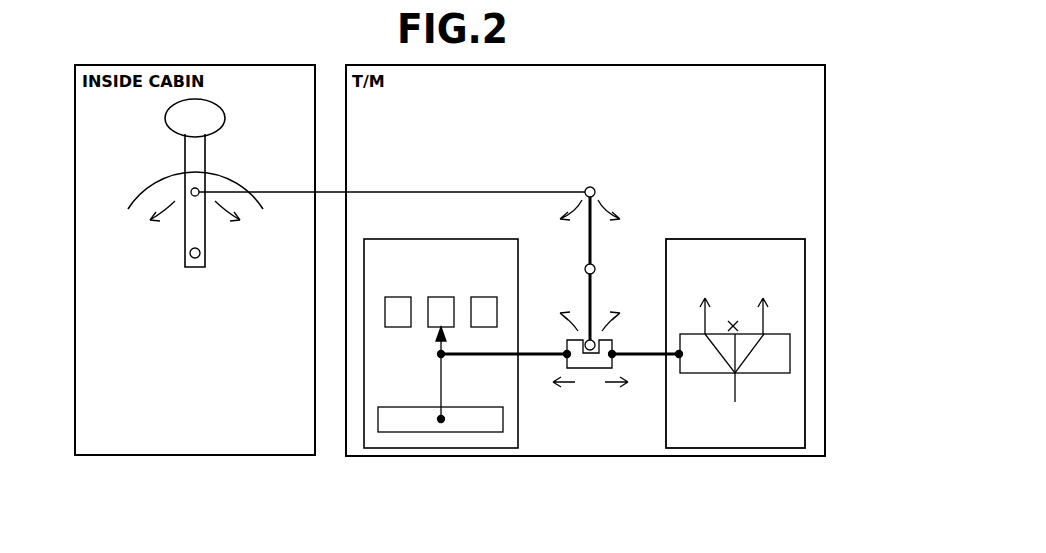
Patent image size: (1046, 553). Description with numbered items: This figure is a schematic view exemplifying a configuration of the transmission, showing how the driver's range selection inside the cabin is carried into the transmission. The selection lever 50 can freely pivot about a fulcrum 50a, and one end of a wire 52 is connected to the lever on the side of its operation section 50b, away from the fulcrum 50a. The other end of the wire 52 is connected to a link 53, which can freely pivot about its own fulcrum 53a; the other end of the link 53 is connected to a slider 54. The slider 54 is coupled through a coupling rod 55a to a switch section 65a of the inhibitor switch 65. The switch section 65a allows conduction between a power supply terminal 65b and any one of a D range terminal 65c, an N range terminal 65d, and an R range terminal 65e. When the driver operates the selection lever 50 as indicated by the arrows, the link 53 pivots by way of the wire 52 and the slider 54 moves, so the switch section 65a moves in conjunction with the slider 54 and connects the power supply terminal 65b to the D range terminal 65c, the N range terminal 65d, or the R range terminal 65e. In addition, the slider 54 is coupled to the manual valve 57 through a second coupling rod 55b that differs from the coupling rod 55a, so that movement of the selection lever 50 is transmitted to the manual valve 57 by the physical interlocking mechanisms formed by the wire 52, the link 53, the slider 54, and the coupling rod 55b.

The selection lever 50 is at (192, 204).
The fulcrum 50a is at (195, 258).
The operation section 50b is at (226, 118).
The wire 52 is at (445, 192).
The link 53 is at (597, 268).
The fulcrum 53a is at (597, 268).
The slider 54 is at (592, 370).
The coupling rod 55a is at (466, 357).
The coupling rod 55b is at (643, 360).
The manual valve 57 is at (745, 376).
The inhibitor switch 65 is at (467, 327).
The switch section 65a is at (441, 398).
The power supply terminal 65b is at (505, 419).
The D range terminal 65c is at (398, 297).
The N range terminal 65d is at (441, 297).
The R range terminal 65e is at (484, 297).